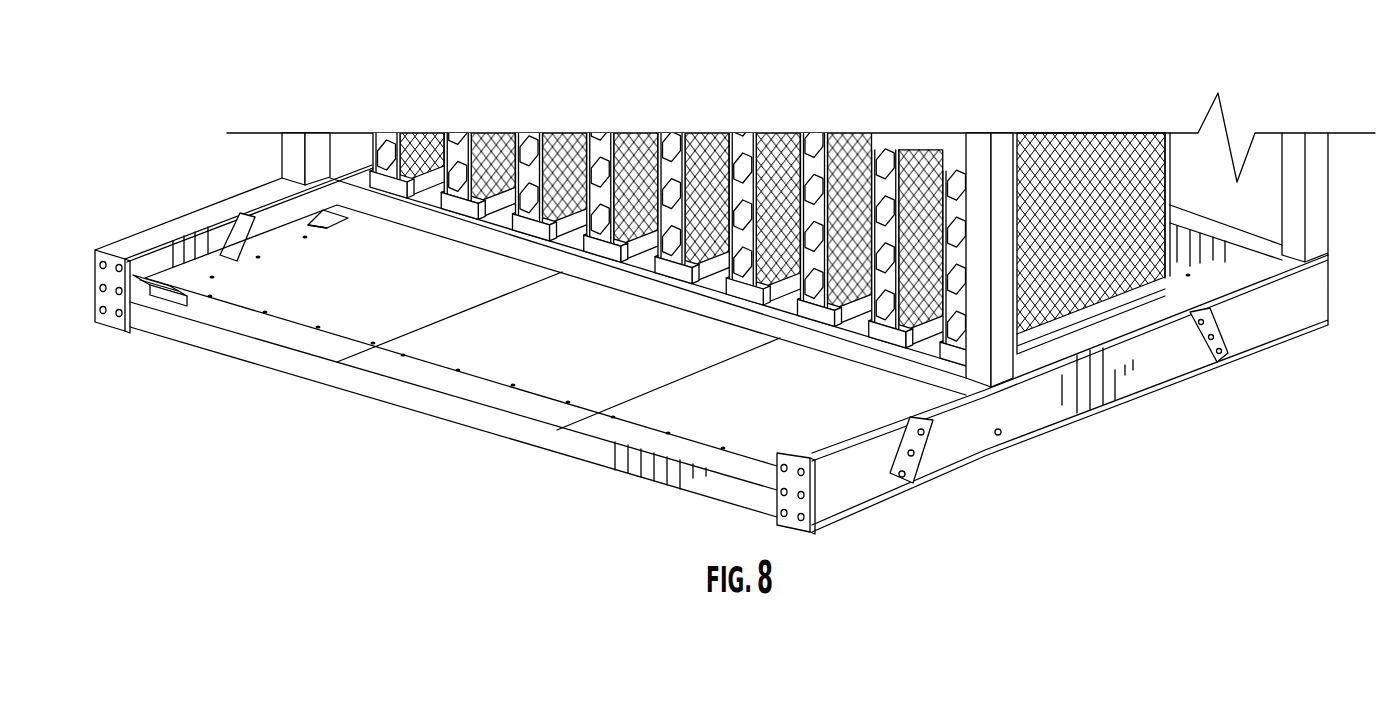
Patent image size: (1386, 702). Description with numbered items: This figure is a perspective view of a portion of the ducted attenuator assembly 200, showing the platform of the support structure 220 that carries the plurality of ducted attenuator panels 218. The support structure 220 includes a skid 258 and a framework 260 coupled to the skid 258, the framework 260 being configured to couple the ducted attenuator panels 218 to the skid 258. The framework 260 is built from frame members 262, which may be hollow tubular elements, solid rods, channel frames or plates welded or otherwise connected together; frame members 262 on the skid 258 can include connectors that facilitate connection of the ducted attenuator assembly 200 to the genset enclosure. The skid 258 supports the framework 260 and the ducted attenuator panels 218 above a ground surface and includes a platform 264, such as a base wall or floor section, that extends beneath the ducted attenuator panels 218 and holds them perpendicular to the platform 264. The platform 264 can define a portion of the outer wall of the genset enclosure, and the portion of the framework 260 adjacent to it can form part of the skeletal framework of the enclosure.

The ducted attenuator assembly 200 is at (998, 70).
The ducted attenuator panels 218 is at (813, 160).
The support structure 220 is at (188, 183).
The skid 258 is at (405, 398).
The framework 260 is at (318, 147).
The frame members 262 is at (296, 152).
The platform 264 is at (577, 447).